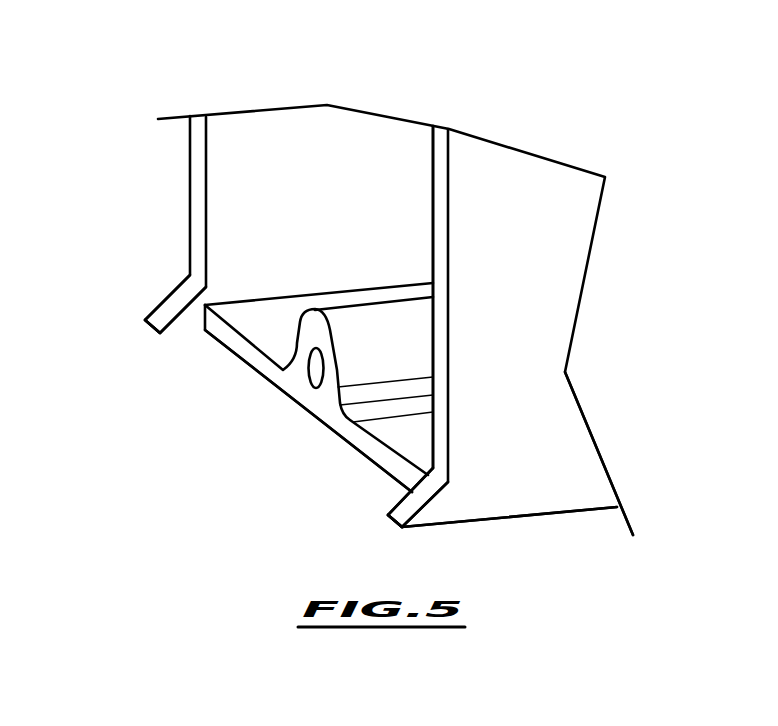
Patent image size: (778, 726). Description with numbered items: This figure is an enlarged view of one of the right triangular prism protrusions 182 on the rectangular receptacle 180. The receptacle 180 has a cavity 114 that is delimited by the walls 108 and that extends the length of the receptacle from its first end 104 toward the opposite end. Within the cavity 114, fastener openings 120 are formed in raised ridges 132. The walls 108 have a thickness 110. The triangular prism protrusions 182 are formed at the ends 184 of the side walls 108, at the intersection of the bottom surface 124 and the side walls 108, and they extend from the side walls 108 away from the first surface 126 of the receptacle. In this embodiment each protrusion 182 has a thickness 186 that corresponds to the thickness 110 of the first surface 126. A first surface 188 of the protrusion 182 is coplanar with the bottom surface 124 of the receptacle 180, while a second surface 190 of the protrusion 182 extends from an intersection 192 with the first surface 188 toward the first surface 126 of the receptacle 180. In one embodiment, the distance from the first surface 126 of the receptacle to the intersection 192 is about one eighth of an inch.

The first end 104 is at (140, 230).
The walls 108 is at (553, 287).
The thickness 110 is at (233, 207).
The cavity 114 is at (323, 175).
The fastener openings 120 is at (313, 368).
The bottom surface 124 is at (574, 518).
The first surface 126 is at (434, 225).
The raised ridges 132 is at (382, 318).
The rectangular receptacle 180 is at (572, 131).
The triangular prism protrusions 182 is at (197, 331).
The ends 184 is at (475, 500).
The thickness 186 is at (158, 298).
The first surface 188 is at (430, 536).
The second surface 190 is at (399, 500).
The intersection 192 is at (390, 525).